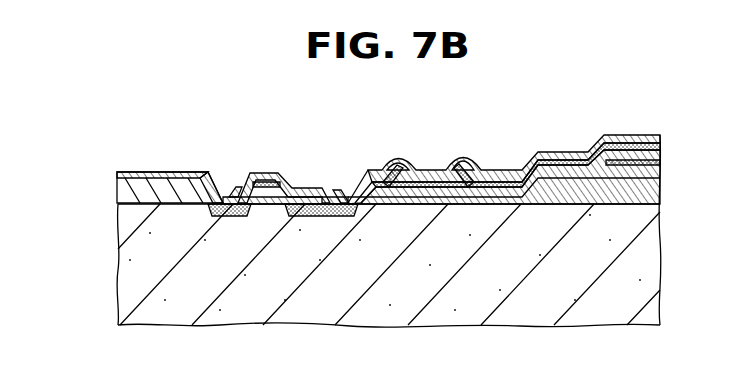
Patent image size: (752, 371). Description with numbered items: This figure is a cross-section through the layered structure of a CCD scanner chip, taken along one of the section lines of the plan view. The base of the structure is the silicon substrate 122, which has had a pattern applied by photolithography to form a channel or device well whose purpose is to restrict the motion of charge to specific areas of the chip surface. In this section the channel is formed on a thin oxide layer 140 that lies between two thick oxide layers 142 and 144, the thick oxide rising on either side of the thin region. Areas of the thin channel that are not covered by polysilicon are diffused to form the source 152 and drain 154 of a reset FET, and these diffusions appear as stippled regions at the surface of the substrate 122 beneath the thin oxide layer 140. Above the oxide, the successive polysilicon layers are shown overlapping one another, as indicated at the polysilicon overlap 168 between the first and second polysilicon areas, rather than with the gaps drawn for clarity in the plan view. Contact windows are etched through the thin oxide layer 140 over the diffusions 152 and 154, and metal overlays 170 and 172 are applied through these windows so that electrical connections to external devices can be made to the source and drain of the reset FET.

The silicon substrate 122 is at (130, 257).
The thin oxide layer 140 is at (507, 203).
The thick oxide layer 142 is at (136, 192).
The thick oxide layer 144 is at (628, 188).
The diffused source 152 is at (310, 218).
The diffused drain 154 is at (231, 218).
The poly 1 and poly 2 overlap 168 is at (410, 168).
The metal overlay 170 is at (347, 203).
The metal overlay 172 is at (216, 180).